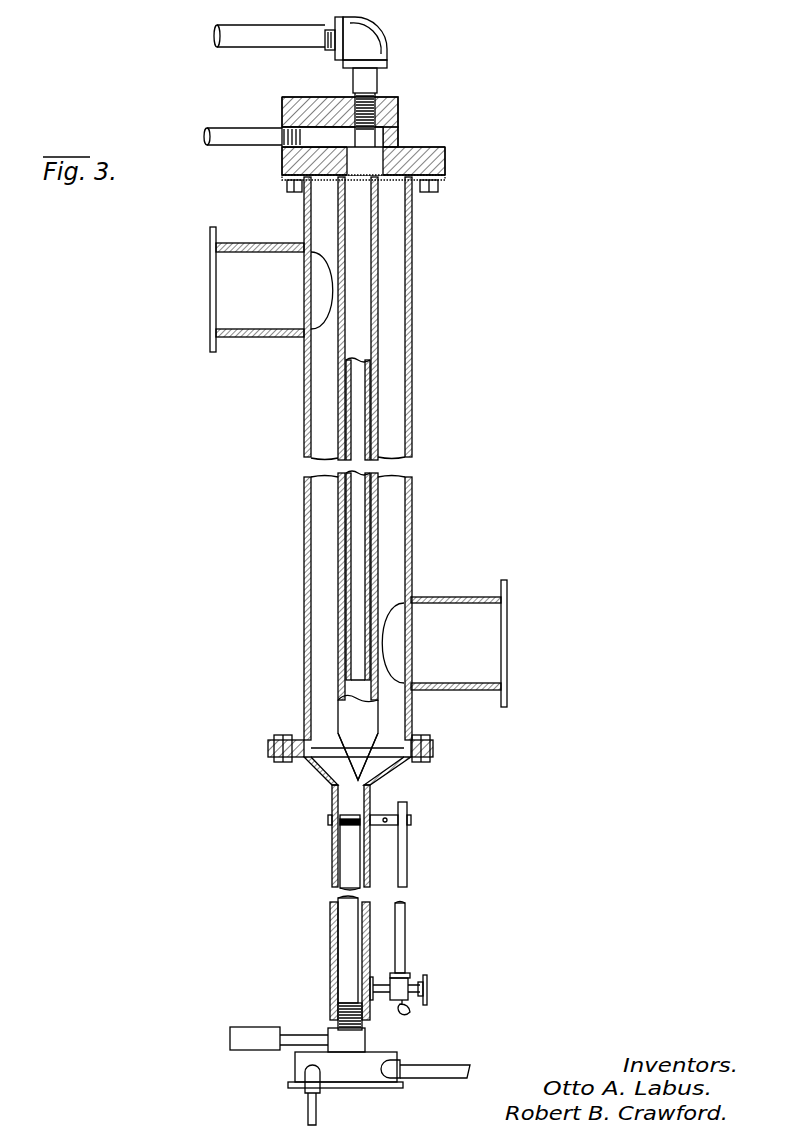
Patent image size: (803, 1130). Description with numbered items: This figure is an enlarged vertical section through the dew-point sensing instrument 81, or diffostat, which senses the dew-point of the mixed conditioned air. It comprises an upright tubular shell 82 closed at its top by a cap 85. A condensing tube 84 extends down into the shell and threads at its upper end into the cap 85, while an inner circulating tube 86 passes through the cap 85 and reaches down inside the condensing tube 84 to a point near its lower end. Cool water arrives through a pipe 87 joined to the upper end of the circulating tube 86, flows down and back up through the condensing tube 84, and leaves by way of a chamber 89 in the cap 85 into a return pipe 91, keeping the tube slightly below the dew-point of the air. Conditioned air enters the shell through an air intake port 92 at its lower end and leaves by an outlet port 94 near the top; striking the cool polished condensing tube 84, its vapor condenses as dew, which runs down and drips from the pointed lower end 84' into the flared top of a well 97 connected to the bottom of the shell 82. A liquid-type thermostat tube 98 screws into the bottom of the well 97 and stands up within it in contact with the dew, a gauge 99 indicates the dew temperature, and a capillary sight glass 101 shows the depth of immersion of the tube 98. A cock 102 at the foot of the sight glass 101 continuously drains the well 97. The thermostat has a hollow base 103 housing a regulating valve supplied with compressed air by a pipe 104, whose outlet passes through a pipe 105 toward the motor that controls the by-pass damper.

The dew-point sensing instrument 81 is at (466, 380).
The tubular shell 82 is at (304, 519).
The condensing tube 84 is at (314, 519).
The pointed lower end 84' is at (315, 888).
The cap 85 is at (400, 136).
The inner circulating tube 86 is at (364, 563).
The pipe 87 is at (244, 43).
The chamber 89 is at (312, 142).
The return pipe 91 is at (220, 150).
The air intake port 92 is at (492, 617).
The outlet port 94 is at (246, 322).
The well 97 is at (332, 856).
The thermostat tube 98 is at (346, 929).
The gauge 99 is at (246, 1036).
The capillary sight glass 101 is at (400, 941).
The cock 102 is at (405, 1012).
The hollow base 103 is at (396, 1068).
The pipe 104 is at (466, 1068).
The pipe 105 is at (300, 1100).